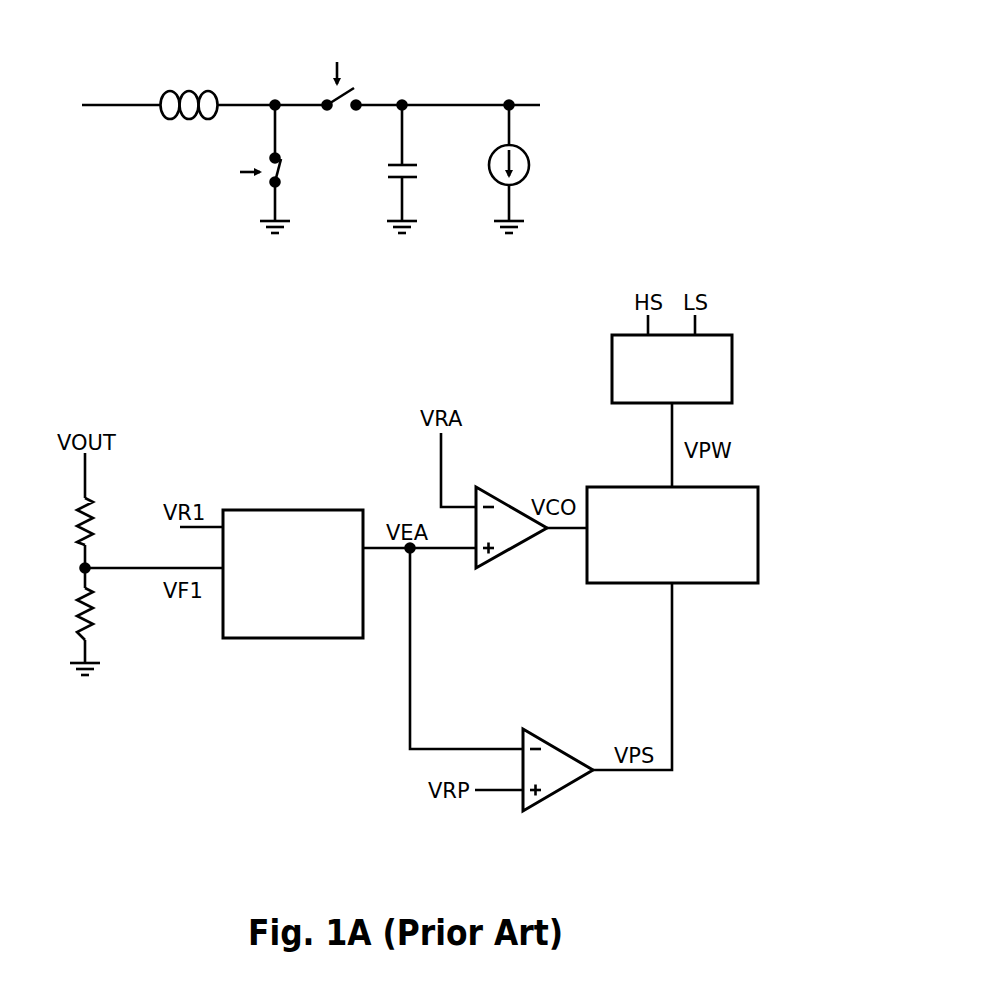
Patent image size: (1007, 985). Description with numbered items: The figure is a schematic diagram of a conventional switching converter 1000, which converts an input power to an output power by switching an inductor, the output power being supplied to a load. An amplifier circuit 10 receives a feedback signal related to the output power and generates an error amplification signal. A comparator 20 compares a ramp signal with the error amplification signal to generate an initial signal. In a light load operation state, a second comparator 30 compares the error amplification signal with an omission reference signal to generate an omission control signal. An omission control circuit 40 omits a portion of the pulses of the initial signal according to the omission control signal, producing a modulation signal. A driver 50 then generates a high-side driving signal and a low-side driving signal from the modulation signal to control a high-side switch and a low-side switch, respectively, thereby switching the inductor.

The switching converter 1000 is at (782, 66).
The amplifier circuit 10 is at (280, 613).
The comparator 20 is at (490, 491).
The comparator 30 is at (540, 736).
The omission control circuit 40 is at (659, 576).
The driver 50 is at (659, 396).